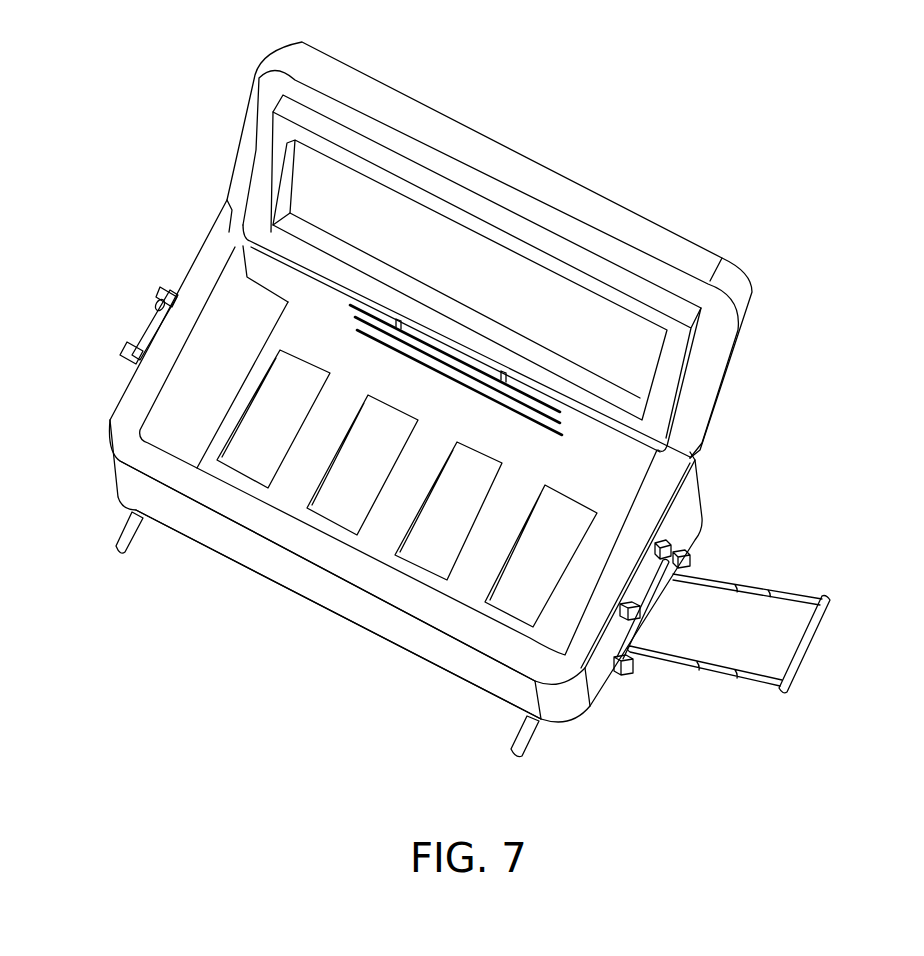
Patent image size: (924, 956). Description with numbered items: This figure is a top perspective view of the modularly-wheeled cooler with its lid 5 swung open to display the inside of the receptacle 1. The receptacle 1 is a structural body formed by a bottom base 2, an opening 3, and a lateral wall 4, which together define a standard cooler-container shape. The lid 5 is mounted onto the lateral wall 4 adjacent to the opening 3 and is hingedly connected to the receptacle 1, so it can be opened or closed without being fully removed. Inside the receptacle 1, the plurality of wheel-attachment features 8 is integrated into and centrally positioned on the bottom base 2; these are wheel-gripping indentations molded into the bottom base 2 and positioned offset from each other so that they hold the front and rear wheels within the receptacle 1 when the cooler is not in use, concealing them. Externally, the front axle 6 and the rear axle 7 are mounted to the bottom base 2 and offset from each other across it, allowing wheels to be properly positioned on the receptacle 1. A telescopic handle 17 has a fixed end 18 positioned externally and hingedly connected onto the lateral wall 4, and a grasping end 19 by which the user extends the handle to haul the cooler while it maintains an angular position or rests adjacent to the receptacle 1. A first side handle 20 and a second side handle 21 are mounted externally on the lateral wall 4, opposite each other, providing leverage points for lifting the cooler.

The receptacle 1 is at (90, 258).
The bottom base 2 is at (213, 383).
The opening 3 is at (233, 296).
The lateral wall 4 is at (297, 583).
The lid 5 is at (710, 382).
The front axle 6 is at (526, 730).
The rear axle 7 is at (132, 533).
The wheel-attachment features 8 is at (313, 397).
The telescopic handle 17 is at (771, 528).
The fixed end 18 is at (632, 675).
The grasping end 19 is at (805, 652).
The first side handle 20 is at (660, 593).
The second side handle 21 is at (148, 325).